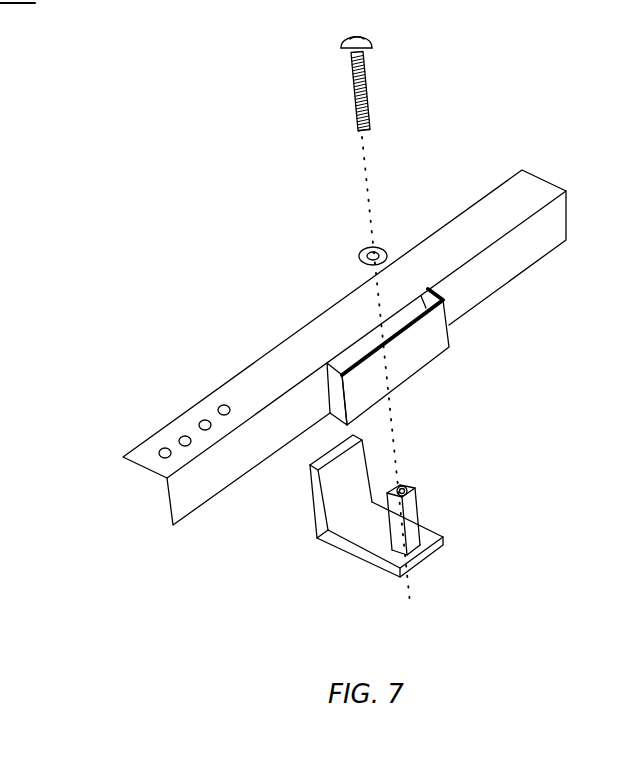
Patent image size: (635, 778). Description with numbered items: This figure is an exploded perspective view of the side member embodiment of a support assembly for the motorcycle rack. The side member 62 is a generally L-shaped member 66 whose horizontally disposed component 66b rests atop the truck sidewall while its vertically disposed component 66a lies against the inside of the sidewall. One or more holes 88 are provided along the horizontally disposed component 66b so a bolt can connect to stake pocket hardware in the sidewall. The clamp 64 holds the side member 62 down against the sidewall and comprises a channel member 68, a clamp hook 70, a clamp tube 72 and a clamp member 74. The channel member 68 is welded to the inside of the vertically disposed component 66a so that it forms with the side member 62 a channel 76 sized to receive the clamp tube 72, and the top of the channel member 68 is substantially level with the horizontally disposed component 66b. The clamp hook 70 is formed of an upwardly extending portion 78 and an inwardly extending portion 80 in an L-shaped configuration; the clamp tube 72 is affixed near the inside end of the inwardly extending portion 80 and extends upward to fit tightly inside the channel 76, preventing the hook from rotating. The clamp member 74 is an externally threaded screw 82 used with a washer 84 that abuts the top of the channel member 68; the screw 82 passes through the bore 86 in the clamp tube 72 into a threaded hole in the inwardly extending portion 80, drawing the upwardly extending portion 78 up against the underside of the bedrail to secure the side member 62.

The side member 62 is at (328, 369).
The clamp 64 is at (408, 527).
The L-shaped member 66 is at (328, 369).
The vertically disposed component 66a is at (195, 500).
The horizontally disposed component 66b is at (514, 195).
The channel member 68 is at (346, 357).
The clamp hook 70 is at (343, 536).
The clamp tube 72 is at (445, 506).
The clamp member 74 is at (310, 163).
The channel 76 is at (337, 361).
The upwardly extending portion 78 is at (313, 502).
The inwardly extending portion 80 is at (375, 540).
The screw 82 is at (369, 86).
The washer 84 is at (384, 247).
The bore 86 is at (410, 485).
The holes 88 is at (160, 452).